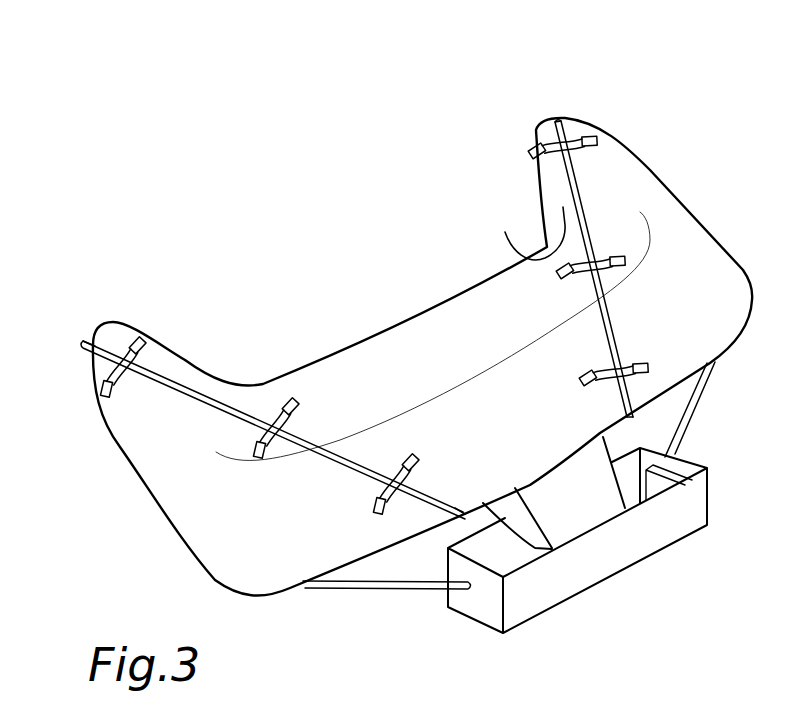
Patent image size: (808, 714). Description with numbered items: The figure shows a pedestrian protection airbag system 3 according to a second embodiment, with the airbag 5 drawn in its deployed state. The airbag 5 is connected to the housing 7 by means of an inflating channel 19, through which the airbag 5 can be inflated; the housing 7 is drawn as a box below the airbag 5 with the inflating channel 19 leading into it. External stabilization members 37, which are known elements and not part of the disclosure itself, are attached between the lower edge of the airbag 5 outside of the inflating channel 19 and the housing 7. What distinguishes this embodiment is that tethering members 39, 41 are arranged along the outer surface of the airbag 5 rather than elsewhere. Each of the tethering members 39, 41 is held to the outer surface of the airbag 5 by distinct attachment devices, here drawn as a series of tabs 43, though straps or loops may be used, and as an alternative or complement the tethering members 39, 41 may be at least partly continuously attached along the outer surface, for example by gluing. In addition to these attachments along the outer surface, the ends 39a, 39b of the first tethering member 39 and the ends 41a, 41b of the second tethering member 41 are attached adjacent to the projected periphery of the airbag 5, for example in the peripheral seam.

The pedestrian protection airbag system 3 is at (222, 232).
The airbag 5 is at (408, 363).
The housing 7 is at (630, 538).
The inflating channel 19 is at (554, 493).
The external stabilization member 37 is at (690, 410).
The tethering member 39 is at (180, 387).
The end of tethering member 39a is at (85, 344).
The end of tethering member 39b is at (463, 518).
The tethering member 41 is at (578, 190).
The end of tethering member 41a is at (557, 118).
The end of tethering member 41b is at (630, 417).
The tab 43 is at (285, 402).